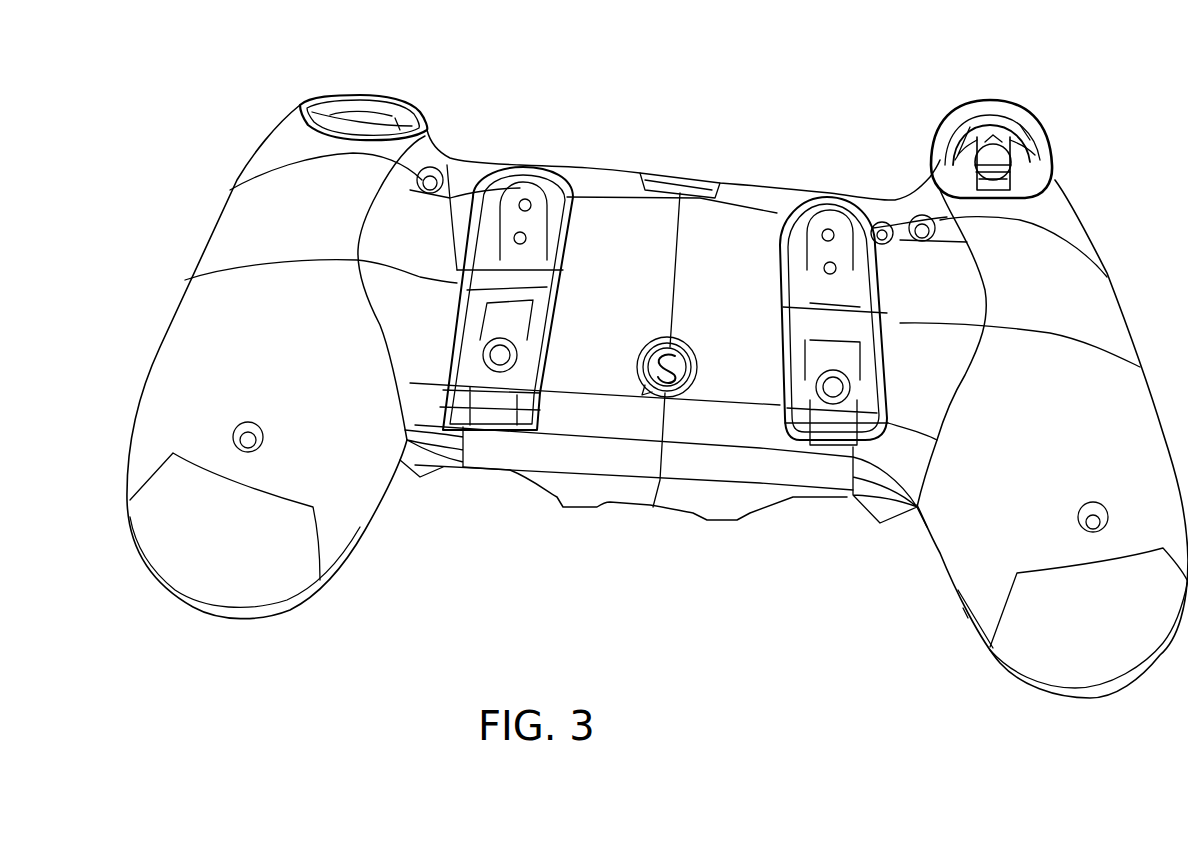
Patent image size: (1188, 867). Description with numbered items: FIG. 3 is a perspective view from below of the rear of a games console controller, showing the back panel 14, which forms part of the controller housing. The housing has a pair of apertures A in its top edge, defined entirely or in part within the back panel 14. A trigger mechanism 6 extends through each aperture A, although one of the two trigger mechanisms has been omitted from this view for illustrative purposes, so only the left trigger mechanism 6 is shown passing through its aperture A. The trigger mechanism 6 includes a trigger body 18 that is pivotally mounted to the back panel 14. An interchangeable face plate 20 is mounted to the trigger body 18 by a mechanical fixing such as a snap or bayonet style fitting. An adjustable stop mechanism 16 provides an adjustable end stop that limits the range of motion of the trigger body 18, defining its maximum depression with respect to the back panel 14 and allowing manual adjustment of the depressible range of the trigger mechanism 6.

The back panel 14 is at (156, 184).
The trigger mechanism 6 is at (1025, 105).
The face plate 20 is at (967, 103).
The adjustable stop mechanism 16 is at (1013, 147).
The trigger body 18 is at (1027, 178).
The aperture A is at (955, 181).